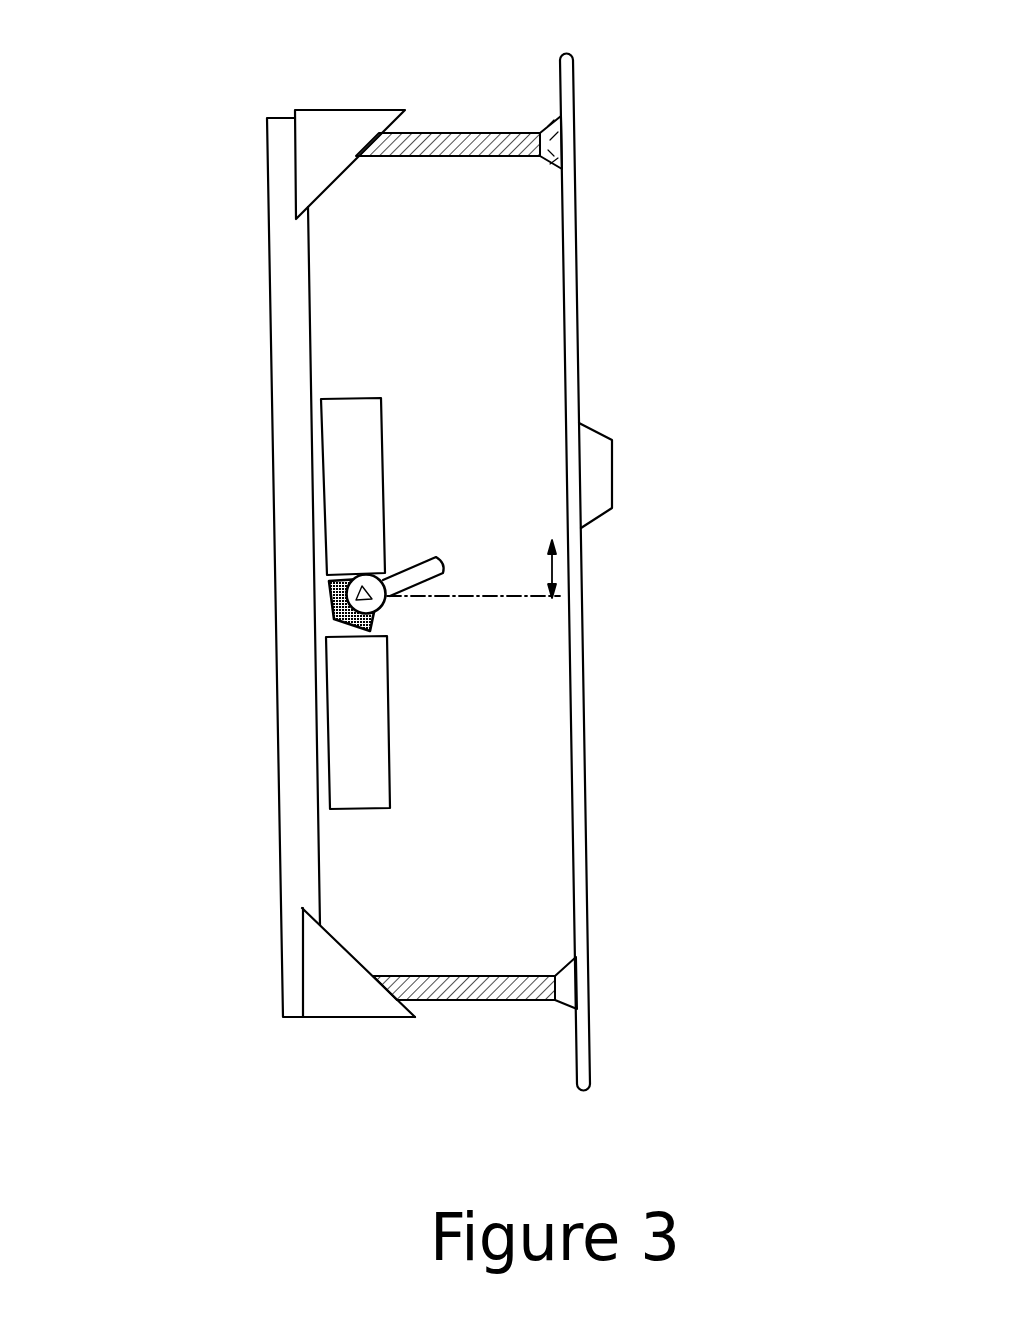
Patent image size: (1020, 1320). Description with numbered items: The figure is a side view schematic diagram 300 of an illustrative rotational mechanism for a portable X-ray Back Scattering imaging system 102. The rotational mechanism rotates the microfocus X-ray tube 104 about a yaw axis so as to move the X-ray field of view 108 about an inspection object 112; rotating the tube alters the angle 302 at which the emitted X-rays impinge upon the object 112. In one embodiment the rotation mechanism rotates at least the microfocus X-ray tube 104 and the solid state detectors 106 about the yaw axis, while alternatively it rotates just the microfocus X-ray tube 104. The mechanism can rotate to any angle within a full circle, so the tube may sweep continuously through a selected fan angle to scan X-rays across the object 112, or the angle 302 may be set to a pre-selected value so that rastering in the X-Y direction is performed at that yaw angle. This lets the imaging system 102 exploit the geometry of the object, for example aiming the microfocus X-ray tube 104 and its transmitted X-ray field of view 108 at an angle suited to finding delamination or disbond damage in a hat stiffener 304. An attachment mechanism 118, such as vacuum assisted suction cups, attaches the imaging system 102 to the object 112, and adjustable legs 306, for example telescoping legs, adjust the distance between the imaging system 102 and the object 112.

The side view schematic diagram 300 is at (200, 52).
The portable X-ray Back Scattering imaging system 102 is at (265, 287).
The microfocus X-ray tube 104 is at (413, 567).
The solid state detectors 106 is at (326, 723).
The X-ray field of view 108 is at (507, 548).
The inspection object 112 is at (576, 277).
The attachment mechanism 118 is at (575, 132).
The angle 302 is at (440, 561).
The hat stiffener 304 is at (612, 440).
The adjustable legs 306 is at (493, 133).